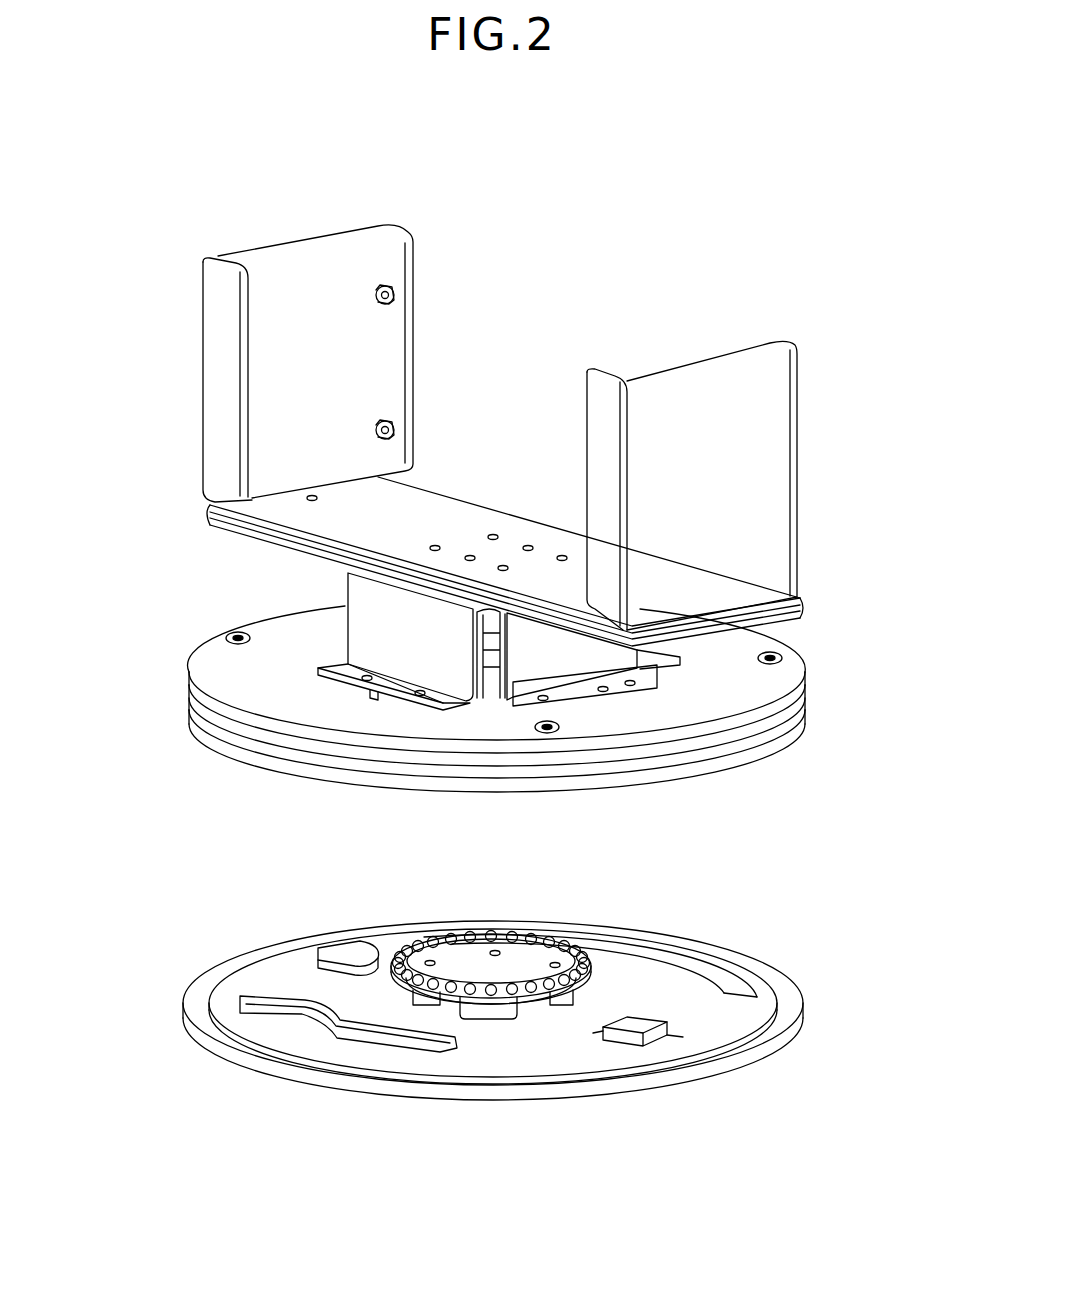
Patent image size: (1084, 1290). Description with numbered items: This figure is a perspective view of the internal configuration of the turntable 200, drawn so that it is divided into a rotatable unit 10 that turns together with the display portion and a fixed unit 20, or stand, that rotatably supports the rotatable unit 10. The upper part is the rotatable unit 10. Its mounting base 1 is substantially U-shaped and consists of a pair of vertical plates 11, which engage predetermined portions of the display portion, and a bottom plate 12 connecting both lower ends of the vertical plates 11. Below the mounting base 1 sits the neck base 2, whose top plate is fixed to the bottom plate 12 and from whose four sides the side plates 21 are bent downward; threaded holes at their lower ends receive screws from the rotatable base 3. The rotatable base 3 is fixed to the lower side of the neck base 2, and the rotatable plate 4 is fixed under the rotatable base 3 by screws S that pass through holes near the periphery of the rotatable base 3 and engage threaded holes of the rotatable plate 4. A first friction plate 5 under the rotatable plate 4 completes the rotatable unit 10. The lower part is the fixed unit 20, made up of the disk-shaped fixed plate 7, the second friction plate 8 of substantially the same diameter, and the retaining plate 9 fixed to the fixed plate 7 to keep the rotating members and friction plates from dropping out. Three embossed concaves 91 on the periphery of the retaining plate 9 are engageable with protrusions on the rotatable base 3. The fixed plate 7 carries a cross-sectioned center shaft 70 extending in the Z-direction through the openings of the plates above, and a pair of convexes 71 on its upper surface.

The turntable 200 is at (708, 209).
The mounting base 1 is at (188, 474).
The rotatable unit 10 is at (844, 797).
The vertical plates 11 is at (303, 290).
The bottom plate 12 is at (462, 513).
The neck base 2 is at (349, 633).
The side plates 21 is at (410, 656).
The rotatable base 3 is at (190, 690).
The rotatable plate 4 is at (228, 716).
The first friction plate 5 is at (238, 748).
The screws S is at (786, 667).
The fixed unit 20 is at (844, 873).
The fixed plate 7 is at (415, 1090).
The second friction plate 8 is at (185, 1012).
The retaining plate 9 is at (525, 958).
The concaves 91 is at (452, 932).
The center shaft 70 is at (498, 1012).
The convexes 71 is at (345, 948).